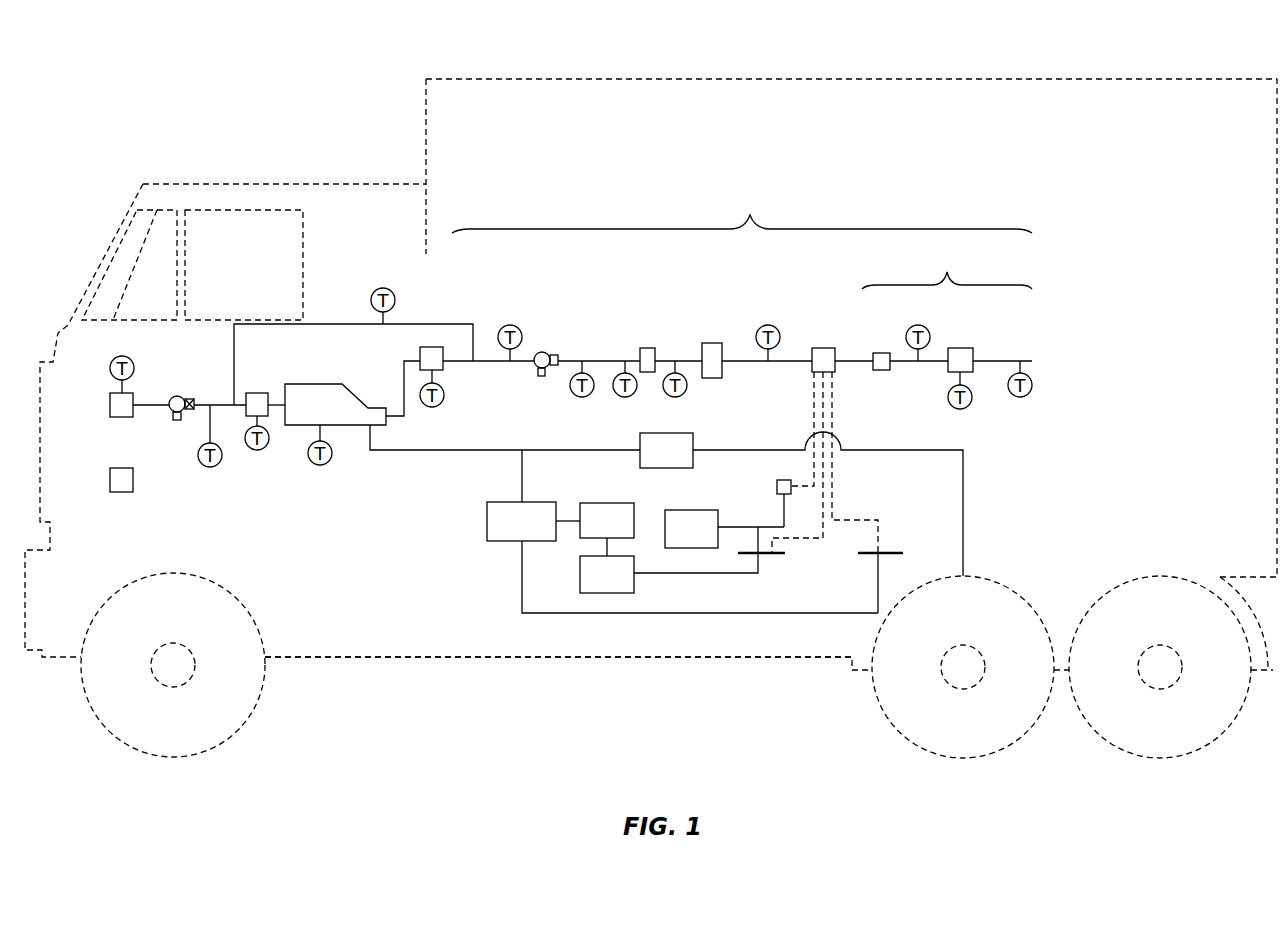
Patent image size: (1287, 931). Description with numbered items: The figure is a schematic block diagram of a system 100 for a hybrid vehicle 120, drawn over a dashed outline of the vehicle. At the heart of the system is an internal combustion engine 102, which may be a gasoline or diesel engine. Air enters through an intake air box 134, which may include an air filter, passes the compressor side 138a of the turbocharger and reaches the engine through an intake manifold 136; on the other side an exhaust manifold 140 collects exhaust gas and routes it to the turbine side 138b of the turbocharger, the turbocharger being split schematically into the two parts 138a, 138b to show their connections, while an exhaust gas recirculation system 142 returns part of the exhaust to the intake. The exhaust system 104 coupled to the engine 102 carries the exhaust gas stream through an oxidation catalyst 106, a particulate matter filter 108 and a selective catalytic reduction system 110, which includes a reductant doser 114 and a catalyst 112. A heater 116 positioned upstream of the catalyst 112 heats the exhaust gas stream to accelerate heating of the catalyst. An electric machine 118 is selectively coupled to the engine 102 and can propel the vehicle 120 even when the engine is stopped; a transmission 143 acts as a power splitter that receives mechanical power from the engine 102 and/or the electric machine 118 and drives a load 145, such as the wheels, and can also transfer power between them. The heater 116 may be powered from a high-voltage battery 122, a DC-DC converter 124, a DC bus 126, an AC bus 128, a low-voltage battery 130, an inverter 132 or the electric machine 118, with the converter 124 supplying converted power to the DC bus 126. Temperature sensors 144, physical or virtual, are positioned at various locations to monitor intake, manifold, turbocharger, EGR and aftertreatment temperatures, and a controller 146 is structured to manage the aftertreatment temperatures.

The system 100 is at (245, 152).
The internal combustion engine 102 is at (334, 416).
The exhaust system 104 is at (742, 210).
The oxidation catalyst 106 is at (645, 348).
The particulate matter filter 108 is at (712, 343).
The selective catalytic reduction (SCR) system 110 is at (947, 264).
The catalyst 112 is at (965, 348).
The reductant doser 114 is at (882, 353).
The heater 116 is at (823, 348).
The electric machine 118 is at (541, 534).
The vehicle 120 is at (388, 659).
The high-voltage battery 122 is at (626, 533).
The DC-DC converter 124 is at (626, 587).
The DC bus 126 is at (772, 556).
The AC bus 128 is at (886, 552).
The low-voltage battery 130 is at (711, 541).
The inverter 132 is at (777, 488).
The intake air box 134 is at (110, 408).
The intake manifold 136 is at (258, 393).
The compressor side of turbocharger 138a is at (181, 396).
The turbine side of turbocharger 138b is at (545, 352).
The exhaust manifold 140 is at (420, 356).
The exhaust gas recirculation (EGR) system 142 is at (325, 324).
The transmission 143 is at (686, 464).
The temperature sensors 144 is at (118, 356).
The load 145 is at (964, 759).
The controller 146 is at (110, 481).